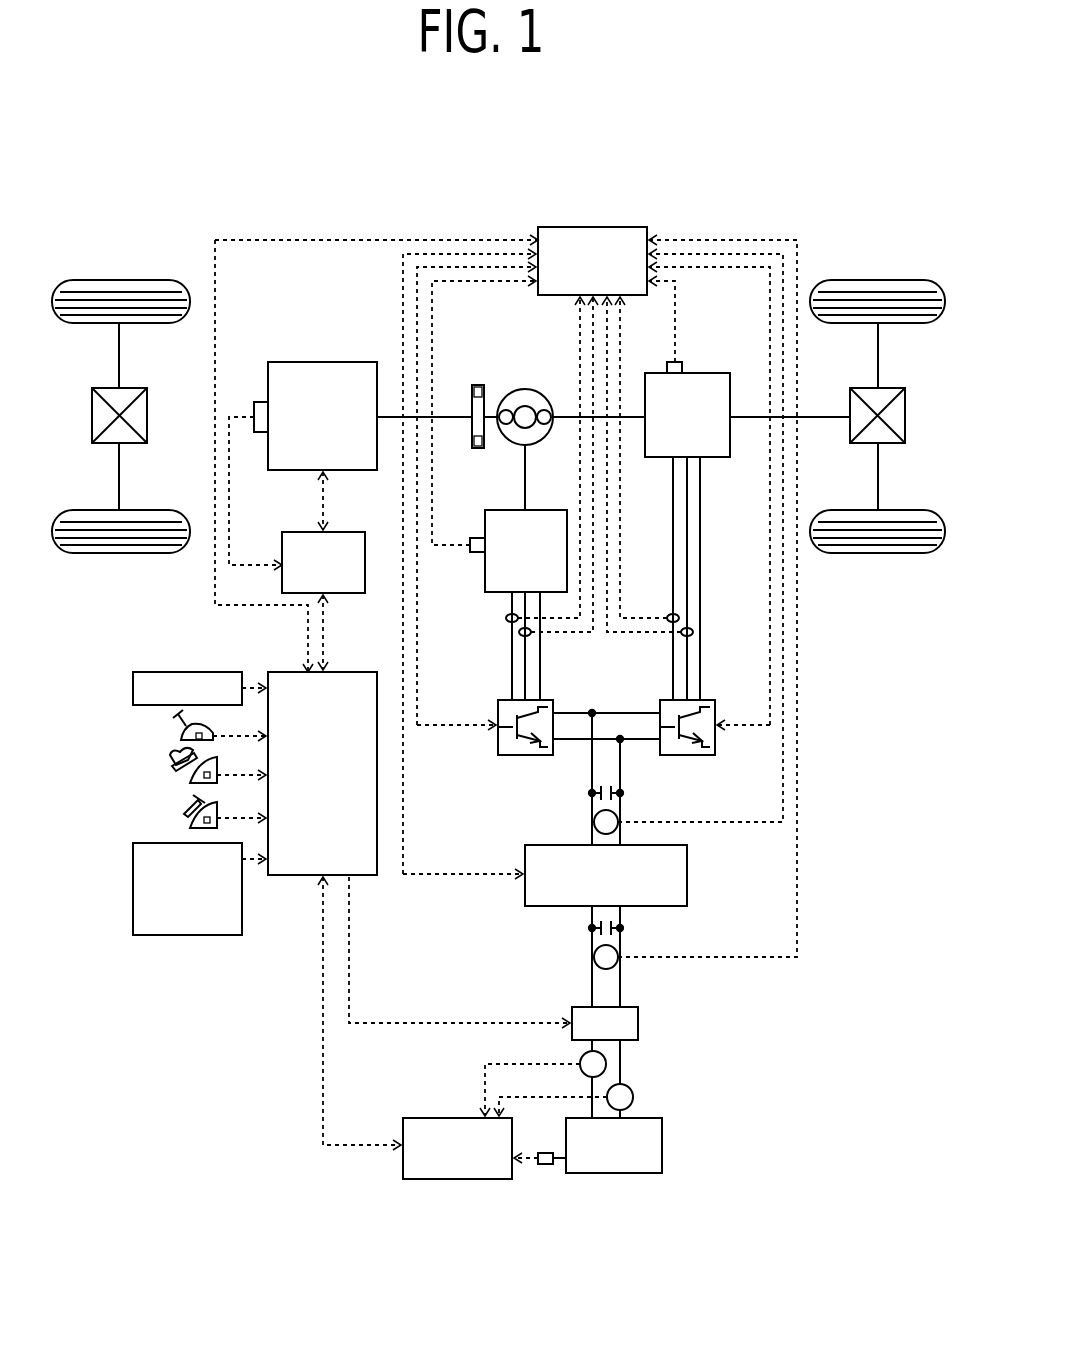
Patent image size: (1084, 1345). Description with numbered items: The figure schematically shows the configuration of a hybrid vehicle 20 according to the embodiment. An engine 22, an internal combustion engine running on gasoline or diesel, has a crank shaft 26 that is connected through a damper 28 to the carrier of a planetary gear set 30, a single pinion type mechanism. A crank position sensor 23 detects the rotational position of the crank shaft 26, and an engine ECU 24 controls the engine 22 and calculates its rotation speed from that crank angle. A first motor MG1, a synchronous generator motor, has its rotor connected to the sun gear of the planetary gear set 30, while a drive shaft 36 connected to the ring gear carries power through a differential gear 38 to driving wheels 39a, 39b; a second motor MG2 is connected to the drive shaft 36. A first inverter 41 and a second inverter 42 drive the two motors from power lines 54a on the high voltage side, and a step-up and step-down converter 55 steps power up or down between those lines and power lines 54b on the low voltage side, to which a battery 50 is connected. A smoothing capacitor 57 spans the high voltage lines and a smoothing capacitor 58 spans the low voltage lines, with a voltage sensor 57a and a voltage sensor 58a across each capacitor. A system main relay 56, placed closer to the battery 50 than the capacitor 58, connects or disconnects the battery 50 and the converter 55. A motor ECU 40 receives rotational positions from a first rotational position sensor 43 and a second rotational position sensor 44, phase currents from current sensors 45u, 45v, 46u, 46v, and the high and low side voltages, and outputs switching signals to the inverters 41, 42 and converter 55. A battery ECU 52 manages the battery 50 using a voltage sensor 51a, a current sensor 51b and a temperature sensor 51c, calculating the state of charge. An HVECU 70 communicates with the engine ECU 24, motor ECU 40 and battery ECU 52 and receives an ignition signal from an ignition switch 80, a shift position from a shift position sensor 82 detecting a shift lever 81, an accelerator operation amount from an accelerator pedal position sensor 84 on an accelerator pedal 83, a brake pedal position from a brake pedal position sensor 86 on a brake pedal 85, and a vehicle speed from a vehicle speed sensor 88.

The hybrid vehicle 20 is at (728, 186).
The engine 22 is at (323, 362).
The crank position sensor 23 is at (262, 402).
The engine ECU 24 is at (350, 532).
The crank shaft 26 is at (452, 415).
The damper 28 is at (479, 385).
The planetary gear set 30 is at (527, 388).
The drive shaft 36 is at (818, 412).
The differential gear 38 is at (890, 388).
The driving wheel 39a is at (877, 280).
The driving wheel 39b is at (877, 553).
The motor ECU 40 is at (592, 227).
The first inverter 41 is at (548, 700).
The second inverter 42 is at (712, 700).
The first rotational position sensor 43 is at (477, 555).
The second rotational position sensor 44 is at (678, 362).
The current sensor 45u is at (506, 618).
The current sensor 45v is at (519, 632).
The current sensor 46u is at (680, 618).
The current sensor 46v is at (694, 632).
The battery 50 is at (663, 1148).
The voltage sensor 51a is at (633, 1097).
The current sensor 51b is at (607, 1064).
The temperature sensor 51c is at (547, 1164).
The battery ECU 52 is at (458, 1118).
The power lines on the high voltage side 54a is at (620, 772).
The power lines on the low voltage side 54b is at (620, 978).
The step-up and step-down converter 55 is at (688, 875).
The system main relay 56 is at (640, 1025).
The smoothing capacitor 57 is at (622, 793).
The voltage sensor 57a is at (593, 822).
The smoothing capacitor 58 is at (622, 928).
The voltage sensor 58a is at (593, 957).
The HVECU 70 is at (350, 672).
The ignition switch 80 is at (130, 688).
The shift lever 81 is at (178, 722).
The shift position sensor 82 is at (185, 737).
The accelerator pedal 83 is at (170, 765).
The accelerator pedal position sensor 84 is at (190, 777).
The brake pedal 85 is at (180, 808).
The brake pedal position sensor 86 is at (190, 820).
The vehicle speed sensor 88 is at (130, 862).
The first motor MG1 is at (500, 510).
The second motor MG2 is at (720, 373).